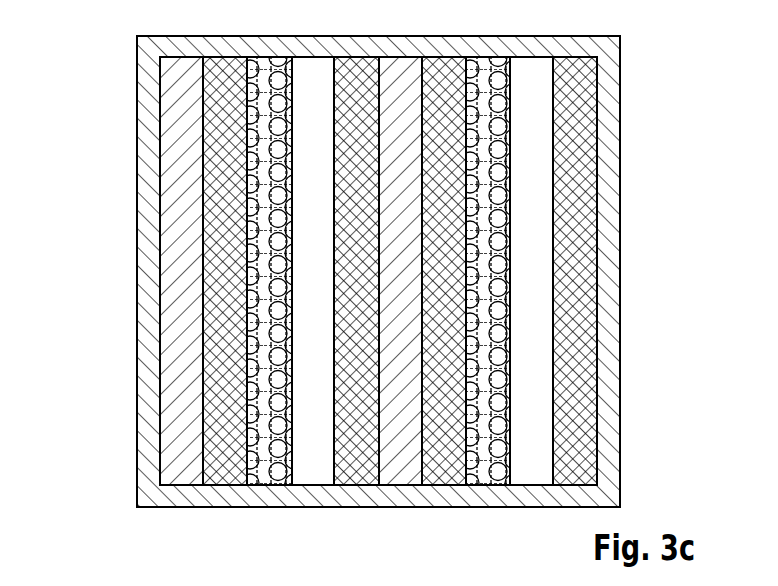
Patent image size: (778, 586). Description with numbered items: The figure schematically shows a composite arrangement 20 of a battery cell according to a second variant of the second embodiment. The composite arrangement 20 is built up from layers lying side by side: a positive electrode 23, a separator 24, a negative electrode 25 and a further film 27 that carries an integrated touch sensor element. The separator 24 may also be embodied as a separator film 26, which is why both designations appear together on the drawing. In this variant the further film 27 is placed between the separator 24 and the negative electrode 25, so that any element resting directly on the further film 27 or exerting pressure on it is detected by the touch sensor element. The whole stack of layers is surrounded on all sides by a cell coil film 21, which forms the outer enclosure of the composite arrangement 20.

The composite arrangement 20 is at (346, 300).
The cell coil film 21 is at (608, 333).
The positive electrode 23 is at (178, 463).
The separator 24 is at (225, 465).
The negative electrode 25 is at (312, 463).
The separator film 26 is at (225, 465).
The further film 27 is at (278, 470).